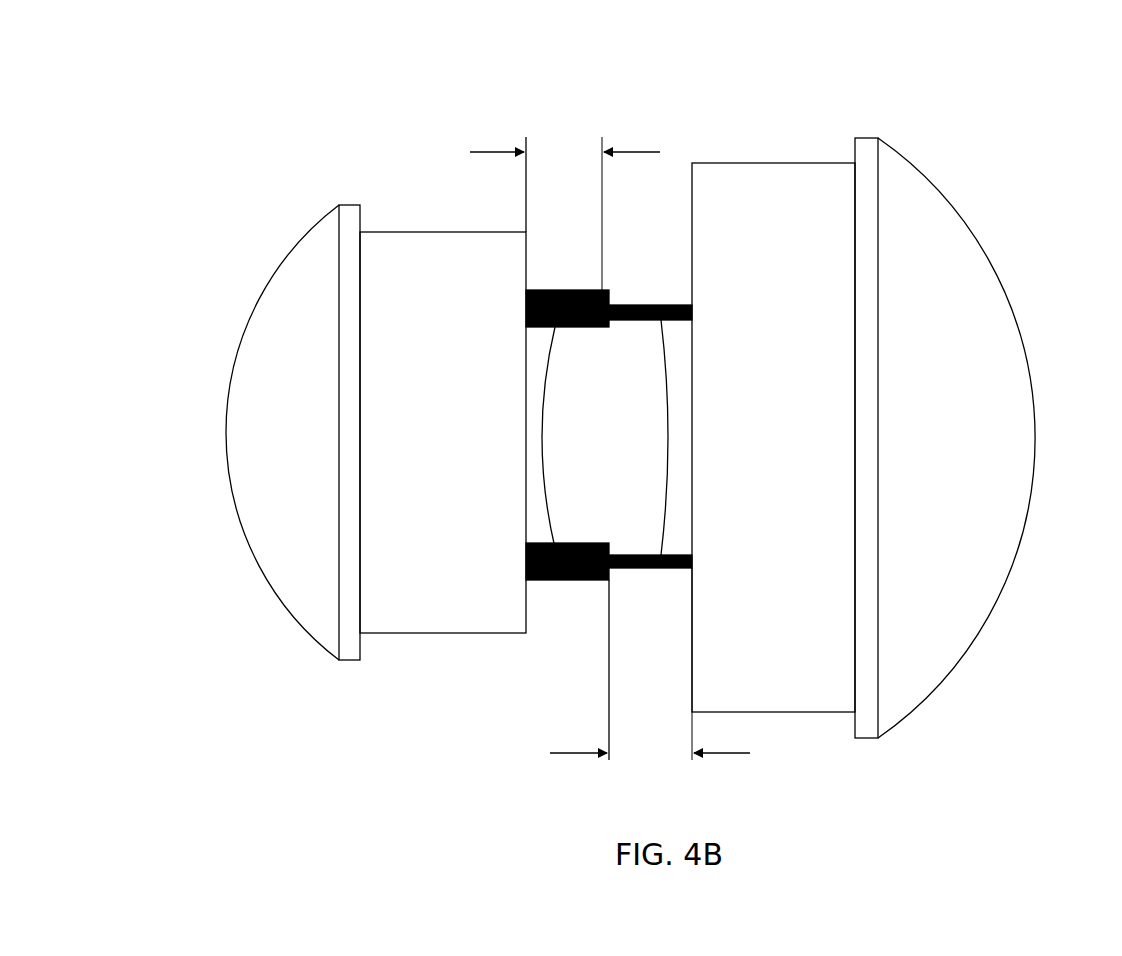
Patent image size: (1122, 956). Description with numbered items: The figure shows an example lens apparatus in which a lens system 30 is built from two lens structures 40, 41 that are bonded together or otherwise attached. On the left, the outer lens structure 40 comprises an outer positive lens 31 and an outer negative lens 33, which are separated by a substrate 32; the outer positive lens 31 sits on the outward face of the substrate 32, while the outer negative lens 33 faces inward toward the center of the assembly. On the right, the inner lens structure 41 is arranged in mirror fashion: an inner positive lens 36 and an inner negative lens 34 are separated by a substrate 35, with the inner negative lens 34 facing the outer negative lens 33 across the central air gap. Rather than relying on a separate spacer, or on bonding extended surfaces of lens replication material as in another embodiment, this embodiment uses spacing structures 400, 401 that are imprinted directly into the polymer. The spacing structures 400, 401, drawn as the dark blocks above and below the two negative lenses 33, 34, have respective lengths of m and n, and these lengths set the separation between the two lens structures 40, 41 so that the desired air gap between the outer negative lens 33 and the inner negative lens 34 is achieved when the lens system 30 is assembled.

The lens system 30 is at (616, 398).
The outer positive lens 31 is at (304, 405).
The substrate 32 is at (432, 405).
The outer negative lens 33 is at (542, 428).
The inner negative lens 34 is at (666, 451).
The substrate 35 is at (761, 417).
The inner positive lens 36 is at (931, 430).
The outer lens structure 40 is at (326, 427).
The inner lens structure 41 is at (899, 436).
The spacing structure 400 is at (571, 581).
The spacing structure 401 is at (636, 302).